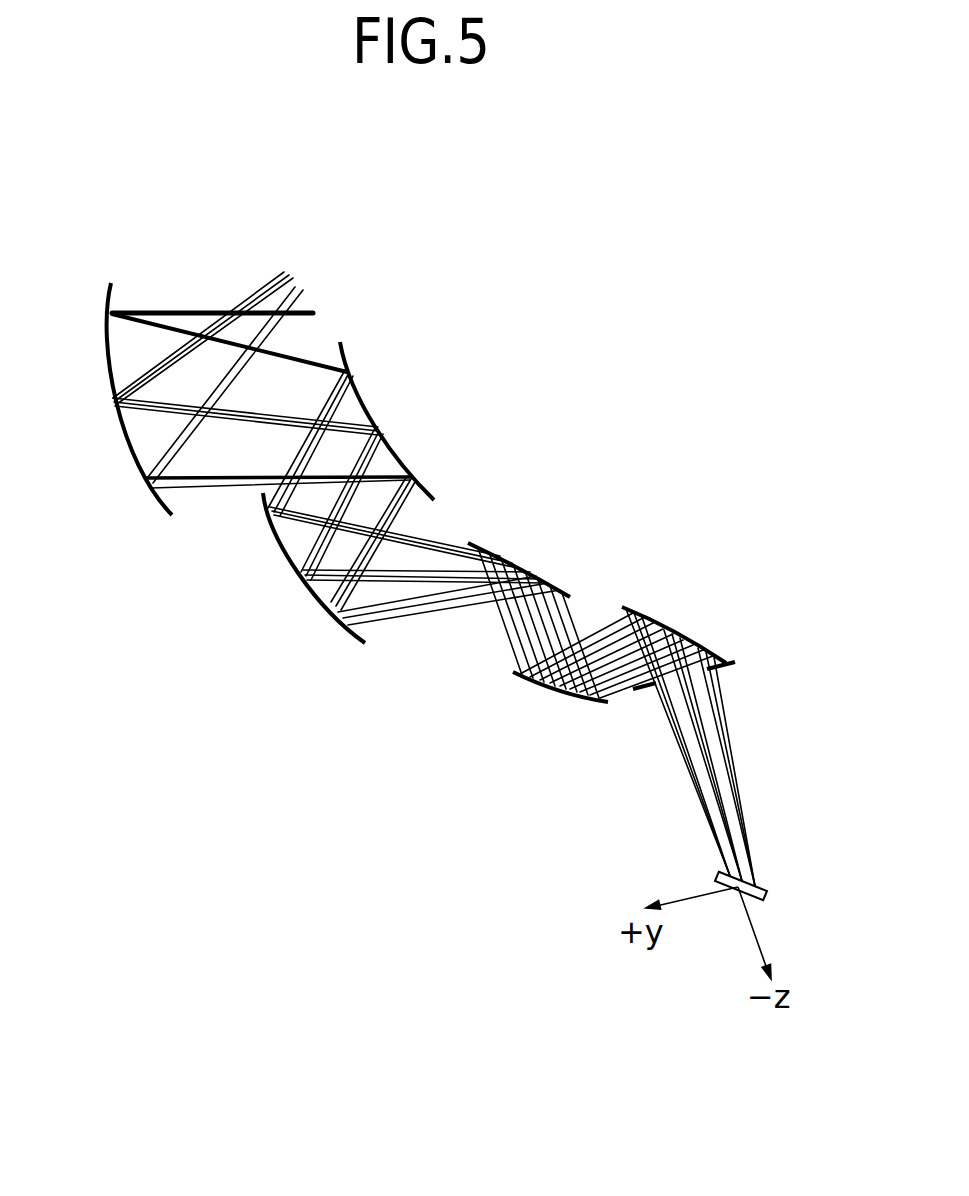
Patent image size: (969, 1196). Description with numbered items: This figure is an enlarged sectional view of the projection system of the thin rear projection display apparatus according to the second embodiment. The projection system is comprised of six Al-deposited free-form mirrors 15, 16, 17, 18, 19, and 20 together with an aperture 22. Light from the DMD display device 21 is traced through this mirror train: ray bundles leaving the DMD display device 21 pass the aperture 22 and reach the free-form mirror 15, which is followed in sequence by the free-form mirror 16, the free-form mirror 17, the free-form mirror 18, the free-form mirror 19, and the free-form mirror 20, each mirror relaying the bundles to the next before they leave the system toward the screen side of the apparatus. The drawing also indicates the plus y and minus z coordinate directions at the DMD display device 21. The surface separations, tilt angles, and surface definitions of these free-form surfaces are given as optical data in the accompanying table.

The free-form mirror 15 is at (677, 626).
The free-form mirror 16 is at (552, 686).
The free-form mirror 17 is at (515, 567).
The free-form mirror 18 is at (304, 576).
The free-form mirror 19 is at (372, 414).
The free-form mirror 20 is at (110, 422).
The DMD display device 21 is at (718, 877).
The aperture 22 is at (735, 660).